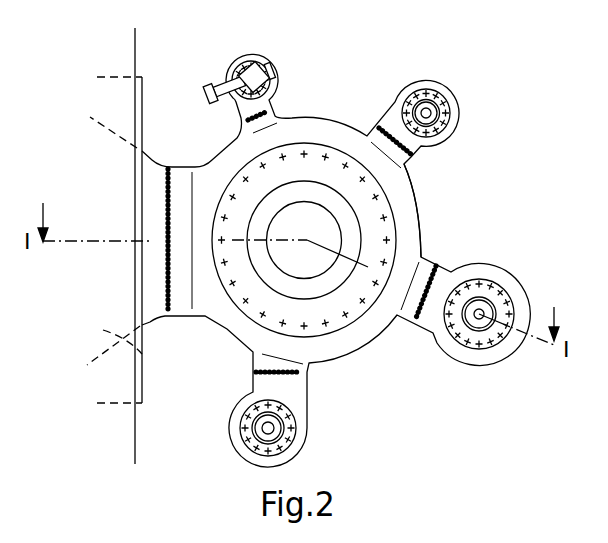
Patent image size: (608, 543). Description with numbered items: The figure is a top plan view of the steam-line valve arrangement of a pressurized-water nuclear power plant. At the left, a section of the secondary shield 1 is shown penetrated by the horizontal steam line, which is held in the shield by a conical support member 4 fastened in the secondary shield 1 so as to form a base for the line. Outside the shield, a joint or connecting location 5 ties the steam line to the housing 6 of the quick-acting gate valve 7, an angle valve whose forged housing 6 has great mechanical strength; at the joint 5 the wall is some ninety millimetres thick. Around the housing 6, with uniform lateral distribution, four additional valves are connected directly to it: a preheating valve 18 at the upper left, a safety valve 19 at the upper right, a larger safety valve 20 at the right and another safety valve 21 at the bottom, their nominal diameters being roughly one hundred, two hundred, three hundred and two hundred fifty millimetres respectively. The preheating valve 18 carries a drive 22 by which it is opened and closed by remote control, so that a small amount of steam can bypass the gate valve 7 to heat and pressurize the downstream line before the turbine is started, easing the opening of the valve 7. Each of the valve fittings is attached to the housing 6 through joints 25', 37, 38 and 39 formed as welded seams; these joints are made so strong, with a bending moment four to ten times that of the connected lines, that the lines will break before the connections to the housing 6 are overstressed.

The secondary shield 1 is at (127, 440).
The conical support member 4 is at (142, 354).
The joint or connecting location 5 is at (165, 165).
The housing 6 is at (416, 208).
The quick-acting gate valve 7 is at (324, 102).
The preheating valve 18 is at (242, 57).
The safety valve 19 is at (456, 122).
The safety valve 20 is at (512, 278).
The safety valve 21 is at (309, 423).
The drive 22 is at (223, 82).
The joint 25' is at (419, 314).
The joint 37 is at (272, 108).
The joint 38 is at (409, 158).
The joint 39 is at (255, 372).